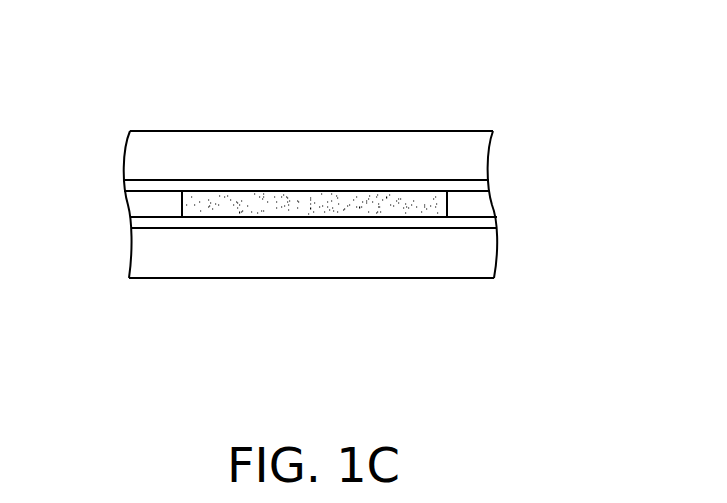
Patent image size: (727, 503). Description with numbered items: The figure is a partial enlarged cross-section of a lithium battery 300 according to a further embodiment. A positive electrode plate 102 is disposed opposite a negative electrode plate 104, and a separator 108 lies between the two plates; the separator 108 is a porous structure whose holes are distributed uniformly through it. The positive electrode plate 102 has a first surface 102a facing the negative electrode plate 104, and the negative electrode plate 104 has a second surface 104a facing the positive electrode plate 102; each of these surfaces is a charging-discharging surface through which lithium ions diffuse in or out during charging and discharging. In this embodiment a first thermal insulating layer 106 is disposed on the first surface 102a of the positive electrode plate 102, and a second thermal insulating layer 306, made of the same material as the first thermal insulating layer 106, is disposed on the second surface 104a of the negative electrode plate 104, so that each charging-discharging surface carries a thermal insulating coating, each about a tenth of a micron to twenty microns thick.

The lithium battery 300 is at (539, 85).
The positive electrode plate 102 is at (200, 132).
The first surface 102a is at (317, 170).
The first thermal insulating layer 106 is at (410, 185).
The separator 108 is at (142, 203).
The second thermal insulating layer 306 is at (410, 222).
The second surface 104a is at (348, 243).
The negative electrode plate 104 is at (193, 265).